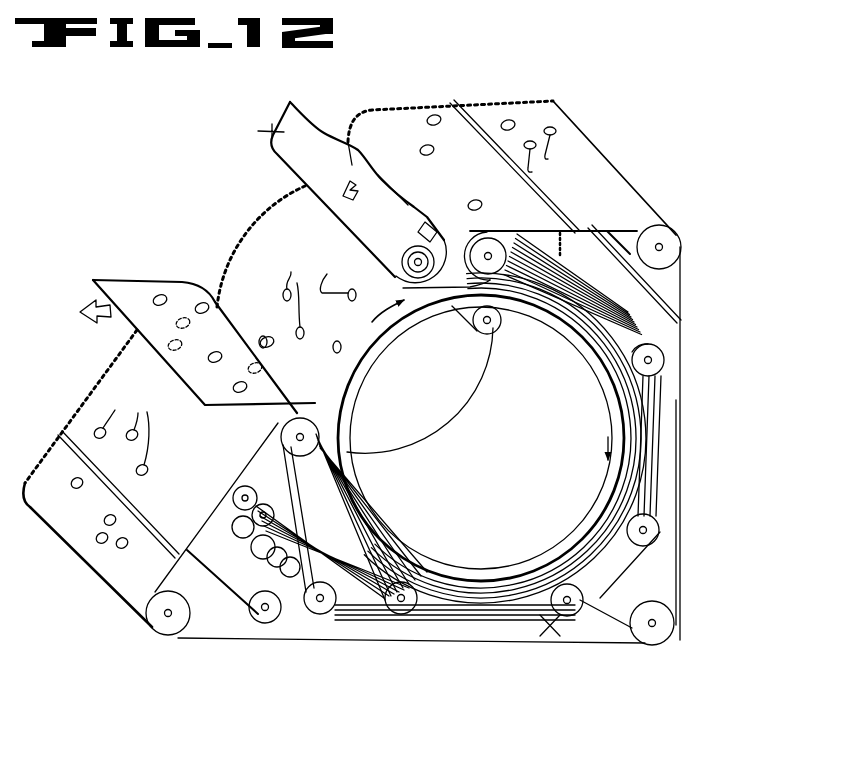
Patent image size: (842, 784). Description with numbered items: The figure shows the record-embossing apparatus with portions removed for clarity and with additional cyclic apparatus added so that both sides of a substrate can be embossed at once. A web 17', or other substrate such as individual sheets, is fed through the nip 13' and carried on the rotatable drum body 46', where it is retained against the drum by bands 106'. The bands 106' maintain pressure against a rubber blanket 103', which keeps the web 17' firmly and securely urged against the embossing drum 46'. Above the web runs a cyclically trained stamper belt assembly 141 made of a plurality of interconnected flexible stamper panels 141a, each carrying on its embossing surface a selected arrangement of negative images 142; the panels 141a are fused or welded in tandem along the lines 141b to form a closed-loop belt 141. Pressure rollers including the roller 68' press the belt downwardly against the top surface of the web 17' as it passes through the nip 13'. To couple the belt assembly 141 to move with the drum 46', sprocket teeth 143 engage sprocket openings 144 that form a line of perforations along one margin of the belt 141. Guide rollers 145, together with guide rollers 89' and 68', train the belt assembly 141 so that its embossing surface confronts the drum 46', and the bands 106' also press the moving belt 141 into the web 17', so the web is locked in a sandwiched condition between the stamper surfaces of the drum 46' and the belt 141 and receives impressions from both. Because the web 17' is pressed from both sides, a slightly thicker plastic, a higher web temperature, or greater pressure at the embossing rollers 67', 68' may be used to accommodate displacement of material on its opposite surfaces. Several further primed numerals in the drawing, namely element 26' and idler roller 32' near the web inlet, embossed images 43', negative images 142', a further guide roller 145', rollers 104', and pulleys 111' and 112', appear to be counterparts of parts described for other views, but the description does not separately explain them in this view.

The sprocket openings 144 is at (378, 110).
The lines 141b is at (486, 131).
The stamper belt assembly 141 is at (604, 147).
The flexible stamper panels 141a is at (481, 178).
The negative images 142 is at (552, 154).
The guide rollers 145 is at (436, 444).
The roller 145' is at (688, 623).
The rubber blanket 103' is at (451, 434).
The belt roller 104' is at (484, 511).
The bands 106' is at (458, 464).
The embossing roller 67' is at (462, 330).
The pressure roller 68' is at (465, 244).
The bearing 32' is at (434, 233).
The roller 26' is at (403, 246).
The web 17' is at (262, 257).
The sprocket teeth 143 is at (262, 213).
The spots on sheet 43' is at (307, 302).
The nip 13' is at (374, 316).
The pins 142' is at (131, 432).
The guide roller 89' is at (259, 433).
The rollers 111' is at (251, 518).
The drum body 46' is at (481, 438).
The roller 112' is at (303, 642).